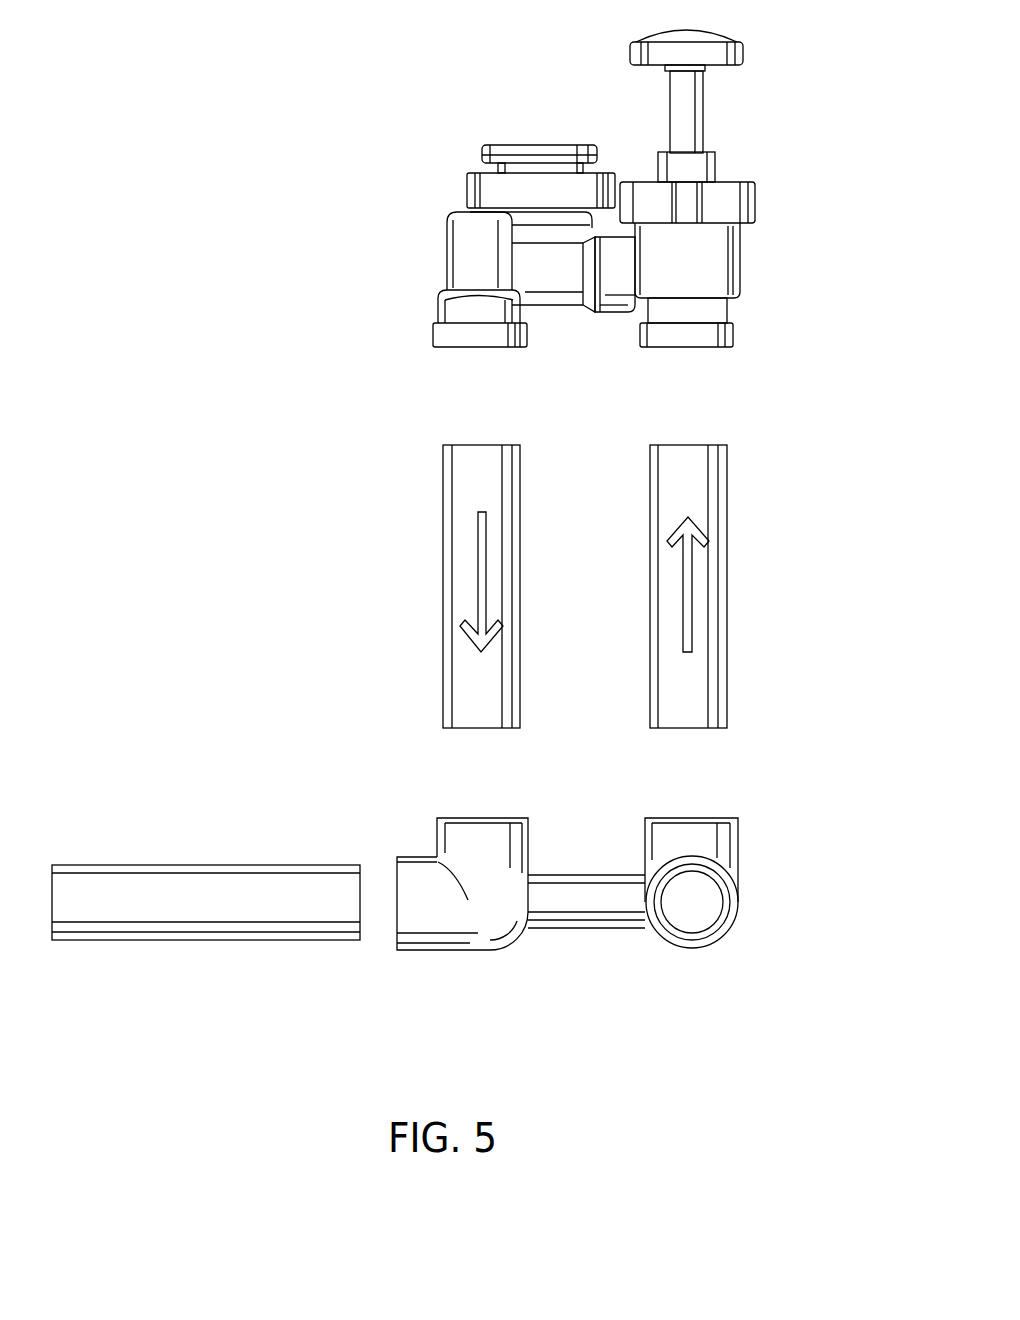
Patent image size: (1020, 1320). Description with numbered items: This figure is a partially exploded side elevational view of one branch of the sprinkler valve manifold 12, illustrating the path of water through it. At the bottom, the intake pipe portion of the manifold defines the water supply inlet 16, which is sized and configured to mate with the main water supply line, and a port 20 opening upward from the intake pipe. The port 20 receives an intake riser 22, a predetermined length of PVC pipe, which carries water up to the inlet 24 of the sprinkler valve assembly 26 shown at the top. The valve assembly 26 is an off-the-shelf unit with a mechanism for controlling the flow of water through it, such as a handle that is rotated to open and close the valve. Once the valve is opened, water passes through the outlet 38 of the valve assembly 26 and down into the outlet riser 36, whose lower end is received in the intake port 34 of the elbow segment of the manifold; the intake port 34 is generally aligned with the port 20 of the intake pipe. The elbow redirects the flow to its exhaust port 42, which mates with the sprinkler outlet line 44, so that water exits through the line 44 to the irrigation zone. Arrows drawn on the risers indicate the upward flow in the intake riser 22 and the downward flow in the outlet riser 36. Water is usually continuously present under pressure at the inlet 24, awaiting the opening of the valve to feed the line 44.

The manifold 12 is at (615, 937).
The water supply inlet 16 is at (705, 928).
The port 20 is at (702, 822).
The intake riser 22 is at (705, 593).
The inlet 24 is at (690, 347).
The sprinkler valve assembly 26 is at (808, 175).
The intake port 34 is at (470, 818).
The outlet riser 36 is at (460, 562).
The outlet 38 is at (483, 347).
The exhaust port 42 is at (405, 915).
The sprinkler outlet line 44 is at (188, 875).